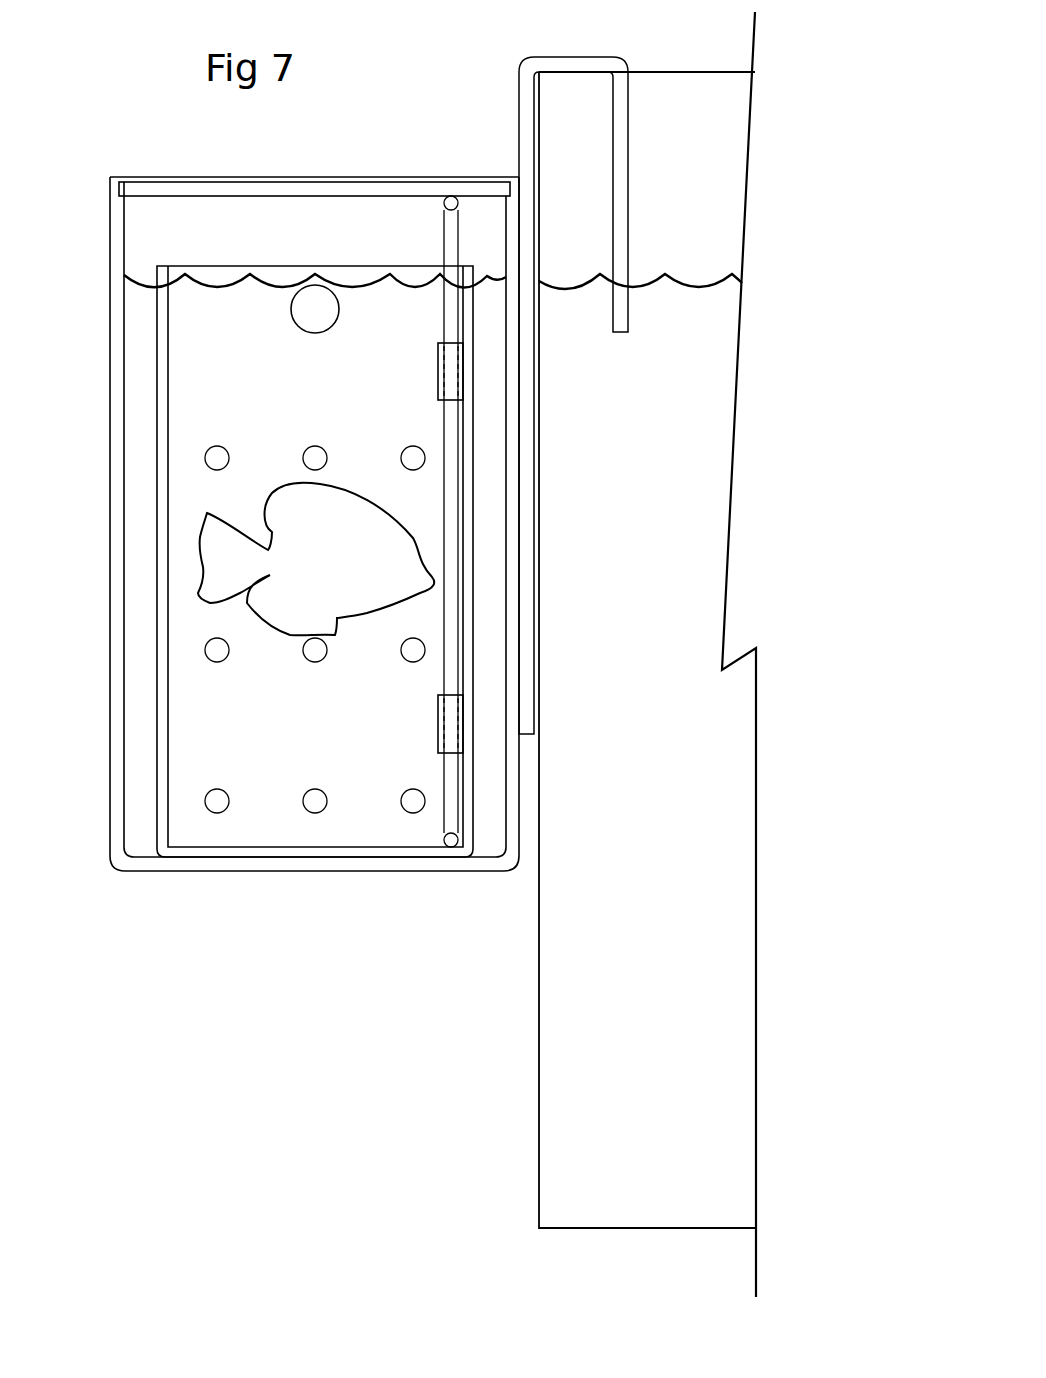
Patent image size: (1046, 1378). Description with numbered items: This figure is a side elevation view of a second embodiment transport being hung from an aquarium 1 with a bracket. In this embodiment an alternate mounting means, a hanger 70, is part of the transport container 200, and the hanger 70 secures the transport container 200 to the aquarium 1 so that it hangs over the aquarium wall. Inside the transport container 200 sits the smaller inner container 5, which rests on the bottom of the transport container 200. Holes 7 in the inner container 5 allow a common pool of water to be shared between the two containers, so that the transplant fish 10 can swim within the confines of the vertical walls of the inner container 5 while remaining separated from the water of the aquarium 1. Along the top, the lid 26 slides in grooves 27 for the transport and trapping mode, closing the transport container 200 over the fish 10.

The aquarium 1 is at (665, 113).
The hanger 70 is at (527, 137).
The inner container 5 is at (157, 472).
The grooves 27 is at (112, 180).
The lid 26 is at (213, 185).
The transport container 200 is at (433, 175).
The holes 7 is at (205, 801).
The transplant fish 10 is at (340, 565).